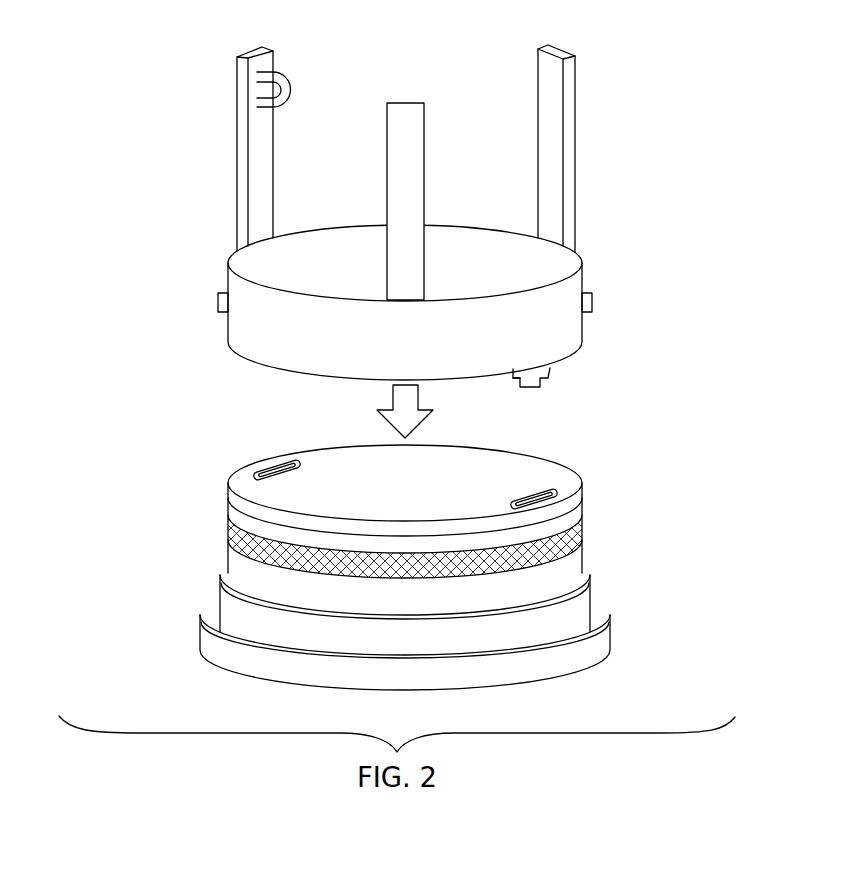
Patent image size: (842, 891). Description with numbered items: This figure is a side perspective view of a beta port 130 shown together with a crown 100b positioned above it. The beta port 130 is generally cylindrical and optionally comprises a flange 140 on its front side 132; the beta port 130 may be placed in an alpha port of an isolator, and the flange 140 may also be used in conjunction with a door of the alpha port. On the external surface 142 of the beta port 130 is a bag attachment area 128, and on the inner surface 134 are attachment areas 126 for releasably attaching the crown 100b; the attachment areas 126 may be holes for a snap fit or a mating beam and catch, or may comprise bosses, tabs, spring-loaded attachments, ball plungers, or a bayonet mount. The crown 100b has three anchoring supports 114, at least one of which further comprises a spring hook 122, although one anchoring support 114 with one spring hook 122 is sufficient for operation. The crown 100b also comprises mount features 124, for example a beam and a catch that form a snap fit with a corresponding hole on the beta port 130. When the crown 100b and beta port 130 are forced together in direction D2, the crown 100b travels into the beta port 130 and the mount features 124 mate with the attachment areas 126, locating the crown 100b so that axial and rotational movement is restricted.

The crown 100b is at (622, 163).
The anchoring support 114 is at (237, 80).
The spring hook 122 is at (290, 74).
The mount feature 124 is at (218, 303).
The attachment area 126 is at (265, 466).
The bag attachment area 128 is at (578, 521).
The beta port 130 is at (617, 544).
The front side 132 is at (555, 660).
The inner surface 134 is at (338, 462).
The flange 140 is at (605, 641).
The external surface 142 is at (236, 500).
The direction D2 is at (421, 397).